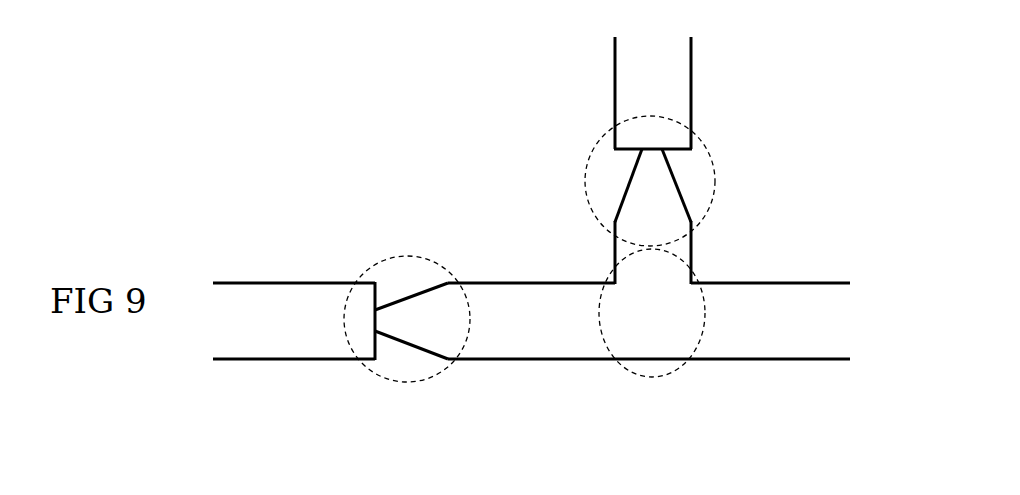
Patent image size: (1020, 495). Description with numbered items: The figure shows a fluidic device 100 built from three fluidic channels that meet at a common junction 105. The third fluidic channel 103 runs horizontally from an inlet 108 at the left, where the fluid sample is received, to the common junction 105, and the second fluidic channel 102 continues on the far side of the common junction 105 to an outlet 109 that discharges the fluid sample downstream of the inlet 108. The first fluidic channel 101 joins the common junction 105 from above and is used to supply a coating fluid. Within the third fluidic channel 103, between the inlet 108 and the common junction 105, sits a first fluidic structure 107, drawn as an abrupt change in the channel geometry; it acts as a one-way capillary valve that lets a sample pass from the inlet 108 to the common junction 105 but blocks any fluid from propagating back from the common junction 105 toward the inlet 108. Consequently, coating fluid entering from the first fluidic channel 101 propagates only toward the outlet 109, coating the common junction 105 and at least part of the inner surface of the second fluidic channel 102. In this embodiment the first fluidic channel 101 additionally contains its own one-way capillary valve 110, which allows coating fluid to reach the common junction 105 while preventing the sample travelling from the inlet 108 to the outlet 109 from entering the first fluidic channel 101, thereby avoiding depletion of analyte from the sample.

The microfluidic device 100 is at (300, 166).
The first fluidic channel 101 is at (691, 79).
The second fluidic channel 102 is at (782, 358).
The third fluidic channel 103 is at (508, 359).
The common junction 105 is at (660, 378).
The first fluidic structure 107 is at (413, 383).
The inlet 108 is at (215, 327).
The outlet 109 is at (822, 322).
The inlet nozzle region 110 is at (714, 188).